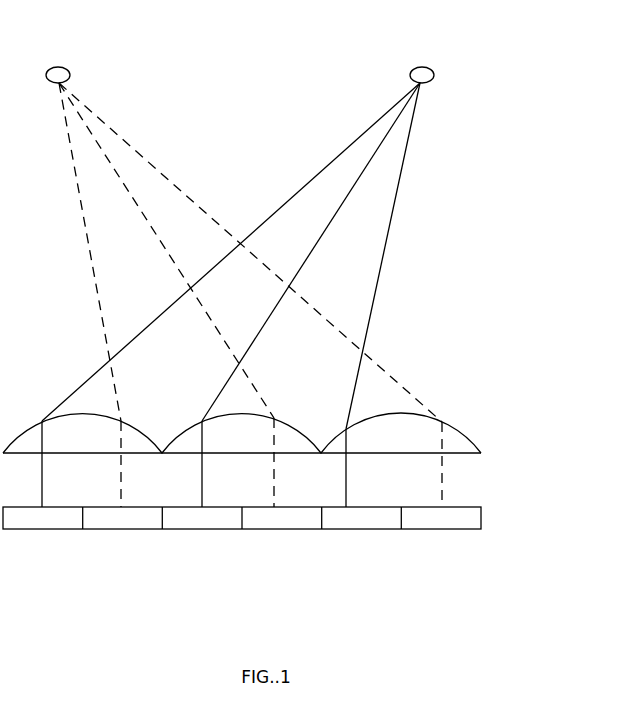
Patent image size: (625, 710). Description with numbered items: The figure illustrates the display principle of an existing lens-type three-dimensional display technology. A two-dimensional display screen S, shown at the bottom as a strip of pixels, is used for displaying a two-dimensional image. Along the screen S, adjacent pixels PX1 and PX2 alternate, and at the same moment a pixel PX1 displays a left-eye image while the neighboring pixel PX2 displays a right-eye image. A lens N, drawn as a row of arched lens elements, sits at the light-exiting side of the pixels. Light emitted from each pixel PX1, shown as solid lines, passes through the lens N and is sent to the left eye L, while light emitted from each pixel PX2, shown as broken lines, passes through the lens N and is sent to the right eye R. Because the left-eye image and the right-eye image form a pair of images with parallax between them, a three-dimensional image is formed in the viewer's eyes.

The right eye R is at (244, 227).
The left eye L is at (240, 231).
The lens N is at (457, 441).
The 2D display screen S is at (279, 560).
The pixel PX1 is at (216, 518).
The pixel PX2 is at (281, 518).